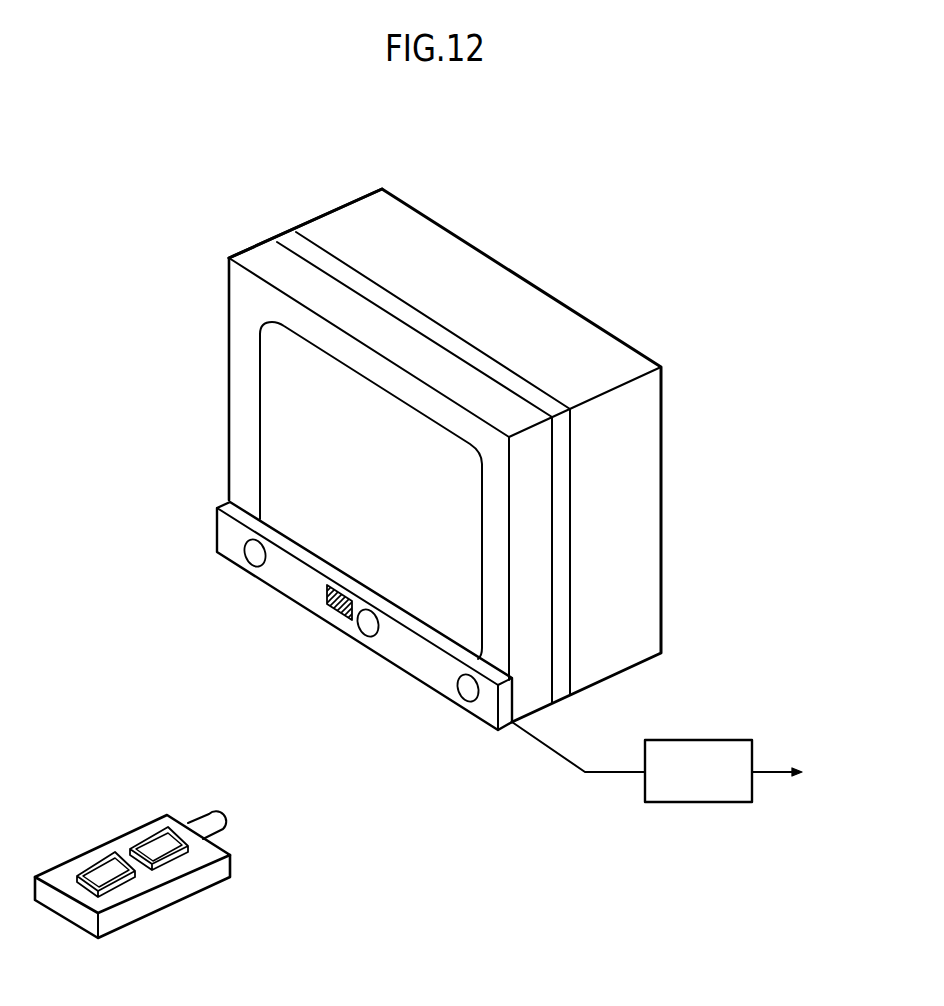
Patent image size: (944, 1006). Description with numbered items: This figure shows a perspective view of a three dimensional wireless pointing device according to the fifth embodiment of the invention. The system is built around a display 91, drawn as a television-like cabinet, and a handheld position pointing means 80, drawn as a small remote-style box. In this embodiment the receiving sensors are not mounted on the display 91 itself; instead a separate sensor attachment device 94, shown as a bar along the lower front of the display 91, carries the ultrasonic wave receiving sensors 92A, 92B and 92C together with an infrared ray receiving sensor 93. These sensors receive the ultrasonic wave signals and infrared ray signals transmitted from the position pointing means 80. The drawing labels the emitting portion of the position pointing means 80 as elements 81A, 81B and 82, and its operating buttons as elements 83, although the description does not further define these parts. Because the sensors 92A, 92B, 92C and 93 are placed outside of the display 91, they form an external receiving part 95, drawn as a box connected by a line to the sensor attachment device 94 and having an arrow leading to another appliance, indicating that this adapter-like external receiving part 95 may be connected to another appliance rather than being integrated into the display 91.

The display 91 is at (665, 512).
The ultrasonic wave receiving sensor 92A is at (255, 562).
The ultrasonic wave receiving sensor 92B is at (463, 696).
The ultrasonic wave receiving sensor 92C is at (367, 636).
The infrared ray receiving sensor 93 is at (332, 623).
The sensor attachment device 94 is at (307, 597).
The external receiving part 95 is at (700, 750).
The position pointing means 80 is at (48, 877).
The light emitting element 81A is at (153, 790).
The light emitting element 81B is at (153, 790).
The transmitter 82 is at (202, 827).
The operation keys 83 is at (107, 873).